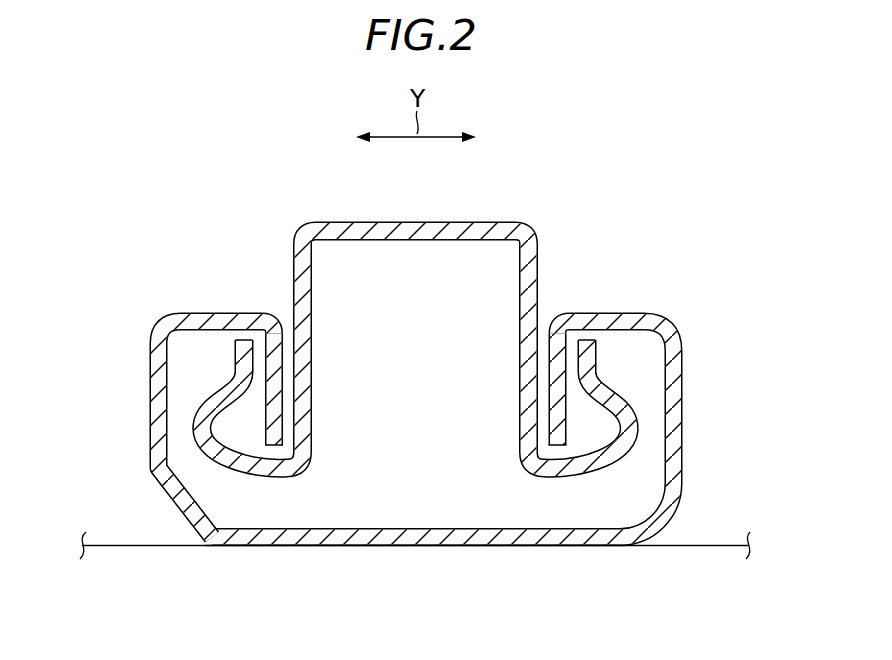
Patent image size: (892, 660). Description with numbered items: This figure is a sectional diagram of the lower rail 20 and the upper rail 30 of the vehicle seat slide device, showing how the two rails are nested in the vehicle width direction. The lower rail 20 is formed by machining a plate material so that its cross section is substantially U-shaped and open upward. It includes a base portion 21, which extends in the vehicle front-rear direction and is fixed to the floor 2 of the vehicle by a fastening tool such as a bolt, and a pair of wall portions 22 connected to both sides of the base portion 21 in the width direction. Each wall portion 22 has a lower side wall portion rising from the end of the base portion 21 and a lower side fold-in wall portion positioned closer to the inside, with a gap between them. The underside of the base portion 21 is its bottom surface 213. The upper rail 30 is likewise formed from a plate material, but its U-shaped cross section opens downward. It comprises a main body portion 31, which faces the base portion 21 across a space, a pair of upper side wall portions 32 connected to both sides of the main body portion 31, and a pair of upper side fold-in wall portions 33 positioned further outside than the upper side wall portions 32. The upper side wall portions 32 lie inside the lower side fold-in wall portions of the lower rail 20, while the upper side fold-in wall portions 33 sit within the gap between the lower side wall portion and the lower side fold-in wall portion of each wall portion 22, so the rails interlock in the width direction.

The floor 2 is at (731, 543).
The lower rail 20 is at (738, 365).
The base portion 21 is at (477, 541).
The bottom surface 213 is at (283, 547).
The wall portion 22 is at (759, 383).
The upper rail 30 is at (491, 221).
The main body portion 31 is at (352, 221).
The upper side wall portion 32 is at (294, 282).
The upper side fold-in wall portion 33 is at (243, 343).